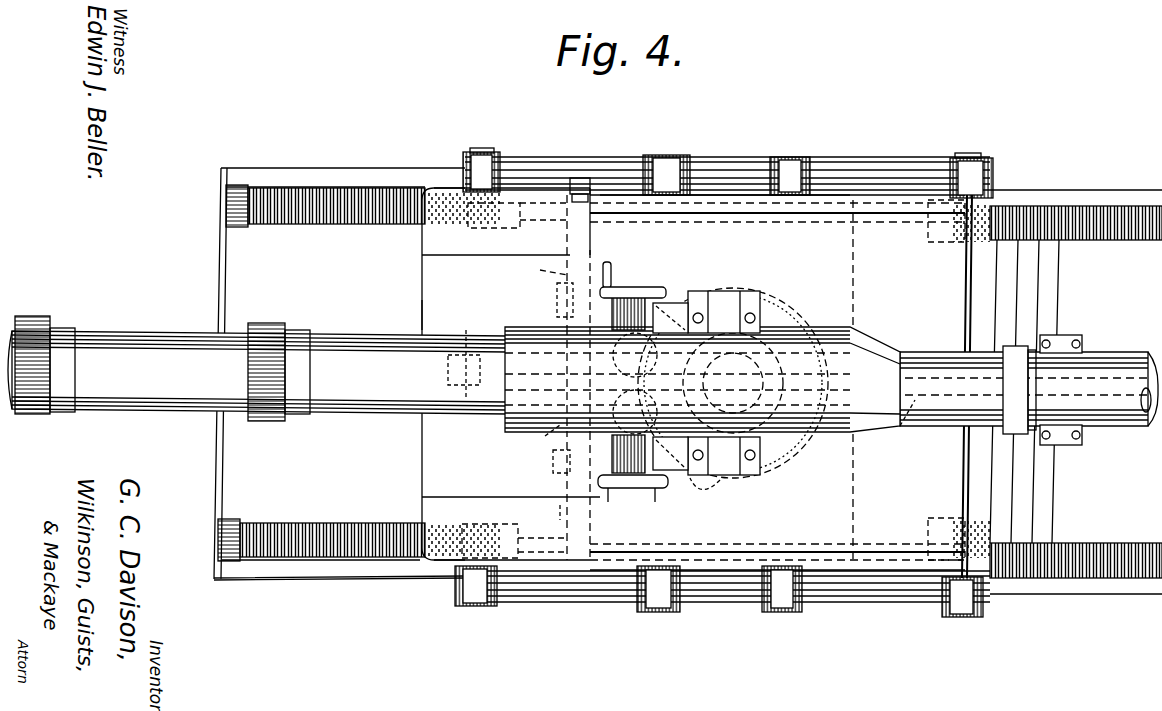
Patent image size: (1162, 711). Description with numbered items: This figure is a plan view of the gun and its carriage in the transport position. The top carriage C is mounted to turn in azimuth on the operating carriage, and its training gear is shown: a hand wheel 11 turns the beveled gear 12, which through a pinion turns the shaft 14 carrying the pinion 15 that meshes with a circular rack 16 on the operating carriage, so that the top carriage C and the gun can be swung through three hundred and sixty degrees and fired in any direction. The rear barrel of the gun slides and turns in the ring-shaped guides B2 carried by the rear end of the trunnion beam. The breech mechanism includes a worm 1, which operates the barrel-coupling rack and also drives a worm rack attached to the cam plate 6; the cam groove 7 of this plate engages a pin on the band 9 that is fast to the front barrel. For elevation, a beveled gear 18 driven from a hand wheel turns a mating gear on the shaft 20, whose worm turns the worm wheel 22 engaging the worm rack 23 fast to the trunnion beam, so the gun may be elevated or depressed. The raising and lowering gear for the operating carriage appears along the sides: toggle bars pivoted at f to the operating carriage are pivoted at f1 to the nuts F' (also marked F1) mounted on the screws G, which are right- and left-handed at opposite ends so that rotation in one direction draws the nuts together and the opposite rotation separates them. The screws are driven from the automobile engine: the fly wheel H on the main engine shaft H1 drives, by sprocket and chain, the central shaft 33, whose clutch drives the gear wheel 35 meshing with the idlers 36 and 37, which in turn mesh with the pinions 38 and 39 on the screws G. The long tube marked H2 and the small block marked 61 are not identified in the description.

The screw G is at (340, 188).
The nut F' is at (727, 372).
The upper pivot of toggle bar f is at (670, 155).
The lower pivot of toggle bar f1 is at (485, 152).
The pinion 39 is at (578, 178).
The nut F1 is at (462, 188).
The fly wheel H is at (720, 232).
The main engine shaft H1 is at (415, 305).
The shaft tube H2 is at (165, 333).
The ring-shaped guide B2 is at (45, 316).
The cam groove 7 is at (470, 360).
The worm 1 is at (463, 365).
The worm wheel 22 is at (560, 340).
The worm rack 23 is at (570, 372).
The idler 37 is at (540, 270).
The central shaft 33 is at (915, 420).
The top carriage C is at (785, 312).
The cam plate 6 is at (731, 291).
The circular rack 16 is at (780, 455).
The pinion 15 is at (700, 472).
The shaft 20 is at (650, 318).
The beveled gear 18 is at (640, 300).
The shaft 14 is at (628, 287).
The beveled gear 12 is at (628, 490).
The hand wheel 11 is at (658, 488).
The gear wheel 35 is at (545, 436).
The idler 36 is at (553, 468).
The pinion 38 is at (560, 520).
The band 9 is at (1018, 346).
The clamp block 61 is at (1048, 335).